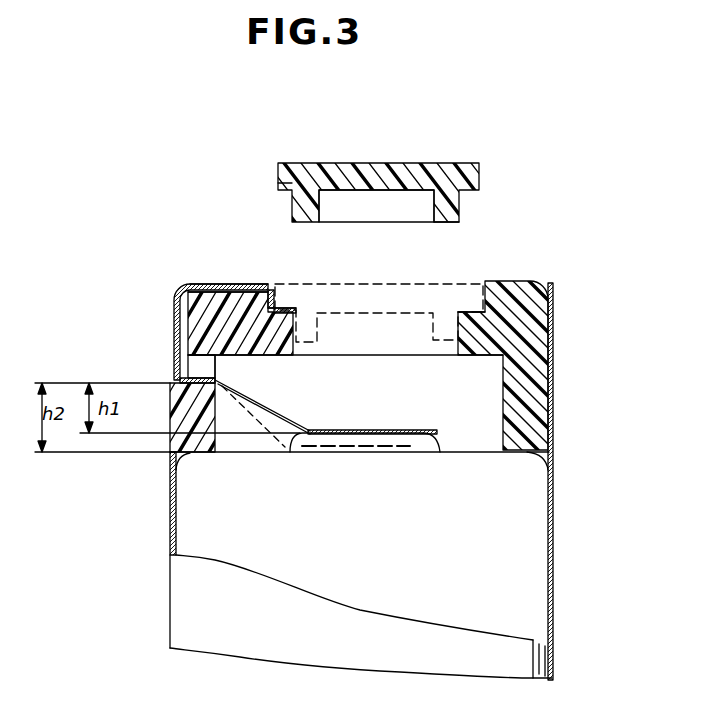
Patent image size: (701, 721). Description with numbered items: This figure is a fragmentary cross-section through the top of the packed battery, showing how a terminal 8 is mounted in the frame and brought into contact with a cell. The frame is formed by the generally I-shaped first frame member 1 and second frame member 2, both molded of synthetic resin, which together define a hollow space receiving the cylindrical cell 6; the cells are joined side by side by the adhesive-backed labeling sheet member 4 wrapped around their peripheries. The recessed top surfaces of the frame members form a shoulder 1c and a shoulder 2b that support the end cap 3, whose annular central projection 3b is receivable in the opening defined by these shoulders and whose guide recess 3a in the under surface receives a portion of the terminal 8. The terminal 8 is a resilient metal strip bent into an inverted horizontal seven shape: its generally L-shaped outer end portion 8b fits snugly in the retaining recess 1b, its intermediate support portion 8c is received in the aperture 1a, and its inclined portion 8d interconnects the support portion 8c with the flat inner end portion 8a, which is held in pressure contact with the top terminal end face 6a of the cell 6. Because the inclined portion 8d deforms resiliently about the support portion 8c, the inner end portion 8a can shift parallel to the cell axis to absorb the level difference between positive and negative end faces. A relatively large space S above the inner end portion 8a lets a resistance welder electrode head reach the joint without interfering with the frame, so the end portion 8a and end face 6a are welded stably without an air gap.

The first frame member 1 is at (178, 420).
The aperture 1a is at (200, 367).
The retaining recess 1b is at (232, 286).
The shoulder 1c is at (298, 306).
The second frame member 2 is at (530, 377).
The shoulder 2b is at (500, 318).
The end cap 3 is at (378, 180).
The guide recess 3a is at (290, 203).
The annular central projection 3b is at (447, 209).
The labeling sheet member 4 is at (548, 510).
The cylindrical cell 6 is at (513, 575).
The top terminal end face 6a is at (397, 440).
The terminal 8 is at (188, 332).
The inner end portion 8a is at (370, 429).
The outer end portion 8b is at (253, 296).
The support portion 8c is at (206, 382).
The inclined portion 8d is at (255, 418).
The space S is at (373, 332).